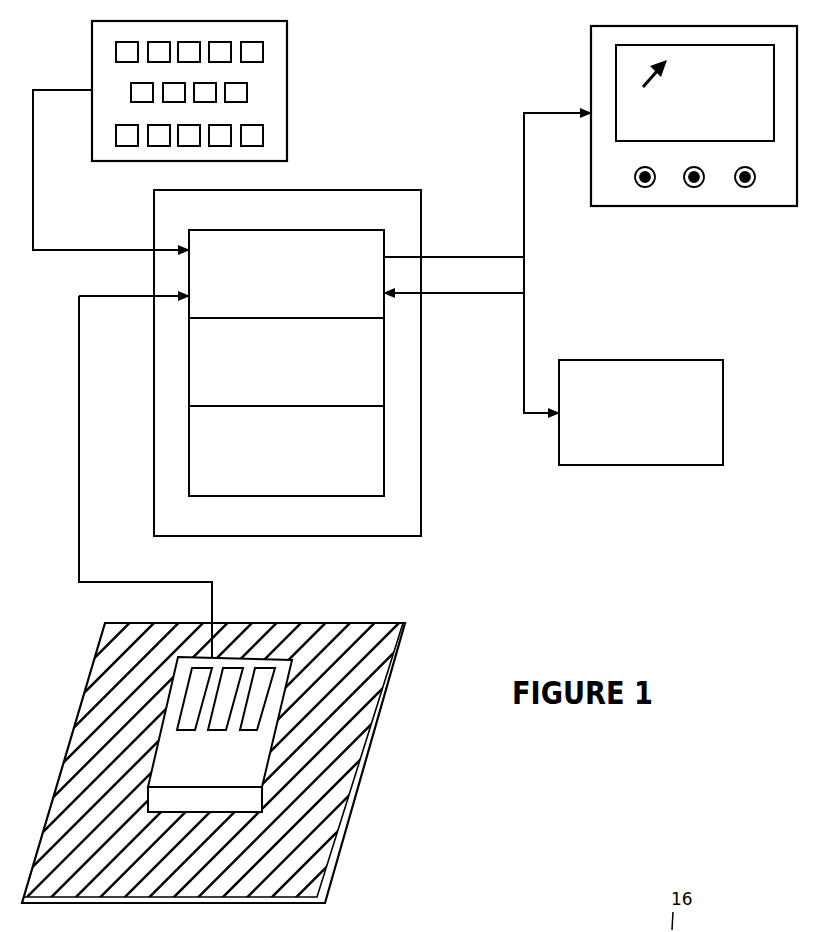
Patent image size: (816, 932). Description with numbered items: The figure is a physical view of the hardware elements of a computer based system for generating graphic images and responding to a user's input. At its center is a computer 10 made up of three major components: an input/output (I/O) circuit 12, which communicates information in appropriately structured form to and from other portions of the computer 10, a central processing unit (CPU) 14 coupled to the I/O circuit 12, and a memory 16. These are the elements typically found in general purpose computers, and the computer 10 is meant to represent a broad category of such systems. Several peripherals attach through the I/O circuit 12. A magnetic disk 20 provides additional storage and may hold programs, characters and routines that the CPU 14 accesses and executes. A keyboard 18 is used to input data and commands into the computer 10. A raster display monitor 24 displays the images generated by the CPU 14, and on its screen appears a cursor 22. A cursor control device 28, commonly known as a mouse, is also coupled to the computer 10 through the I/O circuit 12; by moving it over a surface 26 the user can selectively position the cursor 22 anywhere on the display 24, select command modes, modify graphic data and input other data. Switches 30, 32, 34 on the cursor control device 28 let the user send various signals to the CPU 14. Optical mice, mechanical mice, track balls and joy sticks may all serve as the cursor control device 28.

The computer 10 is at (356, 190).
The input/output (I/O) circuit 12 is at (286, 274).
The central processing unit (CPU) 14 is at (286, 362).
The memory 16 is at (286, 451).
The keyboard 18 is at (287, 84).
The magnetic disk 20 is at (641, 412).
The cursor 22 is at (662, 78).
The raster display monitor 24 is at (648, 206).
The surface 26 is at (380, 720).
The cursor control device 28 is at (237, 685).
The switch 30 is at (194, 699).
The switch 32 is at (225, 699).
The switch 34 is at (257, 699).